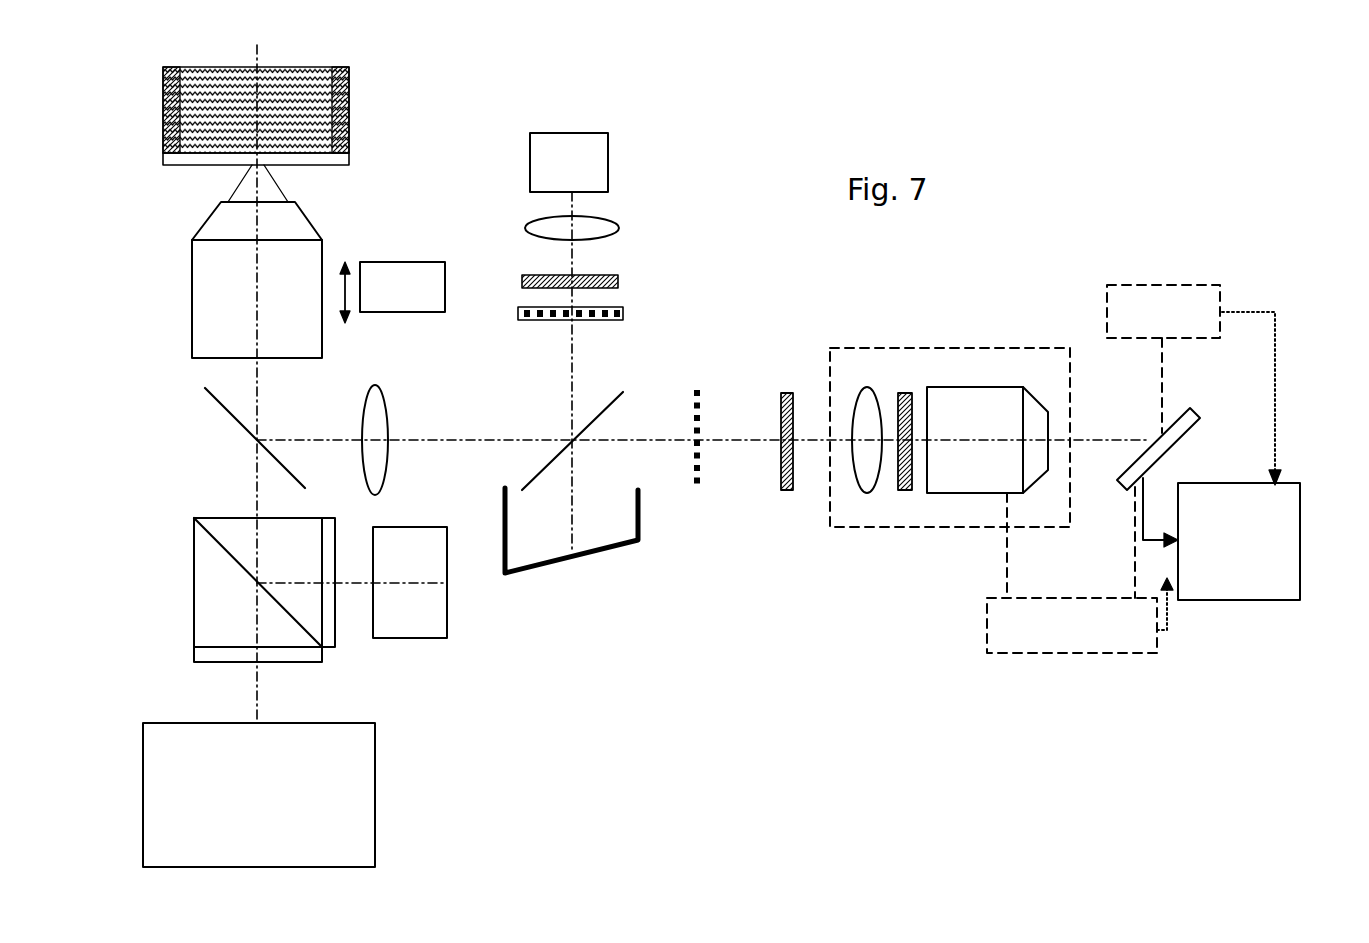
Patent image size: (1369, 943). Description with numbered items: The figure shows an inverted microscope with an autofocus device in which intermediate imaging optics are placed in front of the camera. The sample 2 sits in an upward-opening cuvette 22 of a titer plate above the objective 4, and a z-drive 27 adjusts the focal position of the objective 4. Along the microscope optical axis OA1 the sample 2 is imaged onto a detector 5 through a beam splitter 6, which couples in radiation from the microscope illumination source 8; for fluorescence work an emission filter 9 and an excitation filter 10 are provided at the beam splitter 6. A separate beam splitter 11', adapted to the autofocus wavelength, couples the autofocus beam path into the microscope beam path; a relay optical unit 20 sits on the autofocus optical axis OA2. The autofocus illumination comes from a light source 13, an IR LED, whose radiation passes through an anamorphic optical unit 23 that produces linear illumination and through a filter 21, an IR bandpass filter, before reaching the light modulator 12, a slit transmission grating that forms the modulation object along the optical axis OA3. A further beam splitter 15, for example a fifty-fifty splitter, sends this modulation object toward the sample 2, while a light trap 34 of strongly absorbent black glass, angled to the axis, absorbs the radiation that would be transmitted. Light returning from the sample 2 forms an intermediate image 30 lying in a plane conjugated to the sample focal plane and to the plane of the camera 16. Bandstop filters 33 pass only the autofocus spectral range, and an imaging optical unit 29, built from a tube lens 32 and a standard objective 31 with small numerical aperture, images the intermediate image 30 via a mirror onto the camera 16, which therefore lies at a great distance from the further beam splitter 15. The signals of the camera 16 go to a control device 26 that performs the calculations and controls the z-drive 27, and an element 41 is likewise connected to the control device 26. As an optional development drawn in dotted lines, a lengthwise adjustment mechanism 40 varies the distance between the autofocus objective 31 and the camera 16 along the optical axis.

The sample 2 is at (277, 150).
The cuvette 22 is at (350, 125).
The objective 4 is at (311, 214).
The z-drive 27 is at (400, 262).
The optical axis OA1 is at (262, 375).
The optical axis of the autofocus device OA2 is at (427, 443).
The optical axis OA3 is at (567, 355).
The beam splitter 11' is at (233, 438).
The relay optical unit 20 is at (362, 416).
The beam splitter 6 is at (194, 540).
The emission filter 9 is at (210, 662).
The excitation filter 10 is at (335, 628).
The microscope illumination source 8 is at (447, 596).
The detector 5 is at (375, 800).
The light source 13 is at (530, 150).
The anamorphic optical unit 23 is at (620, 232).
The filter 21 is at (528, 275).
The light modulator 12 is at (623, 312).
The further beam splitter 15 is at (614, 400).
The light trap 34 is at (638, 545).
The intermediate image 30 is at (697, 495).
The imaging optical unit 29 is at (925, 348).
The tube lens 32 is at (855, 404).
The bandstop filters 33 is at (786, 491).
The standard objective 31 is at (988, 387).
The control unit 41 is at (1222, 290).
The camera 16 is at (1185, 425).
The control device 26 is at (1300, 603).
The lengthwise adjustment mechanism 40 is at (1157, 653).